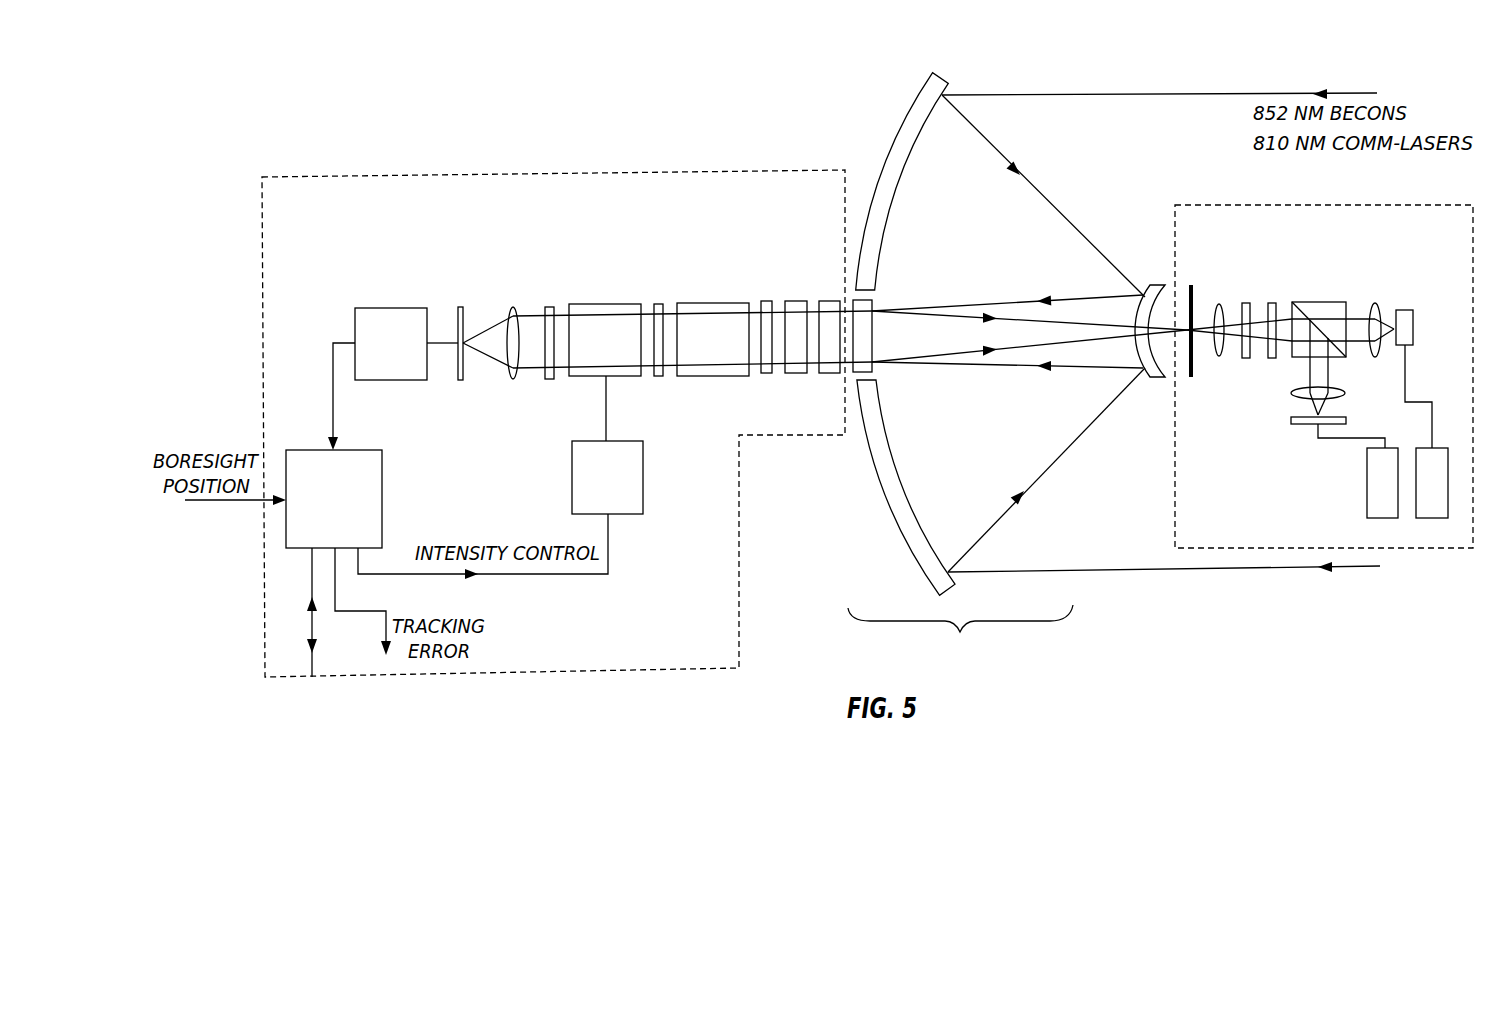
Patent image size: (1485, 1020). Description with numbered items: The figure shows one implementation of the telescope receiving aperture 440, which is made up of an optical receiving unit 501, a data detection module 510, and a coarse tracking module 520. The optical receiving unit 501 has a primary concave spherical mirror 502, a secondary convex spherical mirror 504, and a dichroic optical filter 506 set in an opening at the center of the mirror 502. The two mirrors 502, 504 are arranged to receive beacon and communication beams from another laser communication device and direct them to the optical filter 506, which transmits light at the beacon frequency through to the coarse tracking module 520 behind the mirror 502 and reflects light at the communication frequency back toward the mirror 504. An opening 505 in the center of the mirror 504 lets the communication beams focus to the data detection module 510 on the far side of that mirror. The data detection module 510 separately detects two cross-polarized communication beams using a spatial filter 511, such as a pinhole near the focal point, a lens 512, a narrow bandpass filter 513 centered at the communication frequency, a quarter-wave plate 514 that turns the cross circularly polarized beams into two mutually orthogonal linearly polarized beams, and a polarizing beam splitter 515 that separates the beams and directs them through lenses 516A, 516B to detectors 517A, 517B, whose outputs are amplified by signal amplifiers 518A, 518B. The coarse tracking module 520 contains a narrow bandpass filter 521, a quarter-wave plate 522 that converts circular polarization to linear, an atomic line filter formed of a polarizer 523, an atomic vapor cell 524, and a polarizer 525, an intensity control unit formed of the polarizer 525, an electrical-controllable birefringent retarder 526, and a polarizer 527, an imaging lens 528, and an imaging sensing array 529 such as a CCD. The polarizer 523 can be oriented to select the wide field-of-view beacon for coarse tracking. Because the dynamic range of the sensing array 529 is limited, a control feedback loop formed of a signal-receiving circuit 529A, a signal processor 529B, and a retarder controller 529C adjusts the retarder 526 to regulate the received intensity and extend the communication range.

The telescope receiving aperture 440 is at (552, 144).
The optical receiving unit 501 is at (960, 634).
The primary concave spherical mirror 502 is at (882, 334).
The secondary convex spherical mirror 504 is at (1116, 274).
The opening 505 is at (1029, 360).
The dichroic optical filter 506 is at (827, 276).
The data detection module 510 is at (1324, 355).
The spatial filter 511 is at (1225, 293).
The lens 512 is at (1246, 295).
The narrow bandpass filter 513 is at (1274, 310).
The quarter-wave plate 514 is at (1239, 355).
The polarizing beam splitter 515 is at (1348, 301).
The lens 516A is at (1408, 295).
The lens 516B is at (1272, 419).
The detector 517A is at (1435, 354).
The detector 517B is at (1292, 456).
The signal amplifier 518A is at (1400, 499).
The signal amplifier 518B is at (1338, 485).
The coarse tracking module 520 is at (553, 423).
The narrow bandpass filter 521 is at (795, 289).
The quarter-wave plate 522 is at (762, 301).
The polarizer 523 is at (731, 315).
The atomic vapor cell 524 is at (736, 362).
The polarizer 525 is at (689, 373).
The electrical-controllable birefringent retarder 526 is at (584, 279).
The polarizer 527 is at (512, 293).
The imaging lens 528 is at (477, 308).
The imaging sensing array 529 is at (422, 321).
The signal-receiving circuit 529A is at (407, 379).
The signal processor 529B is at (447, 563).
The retarder controller 529C is at (652, 448).